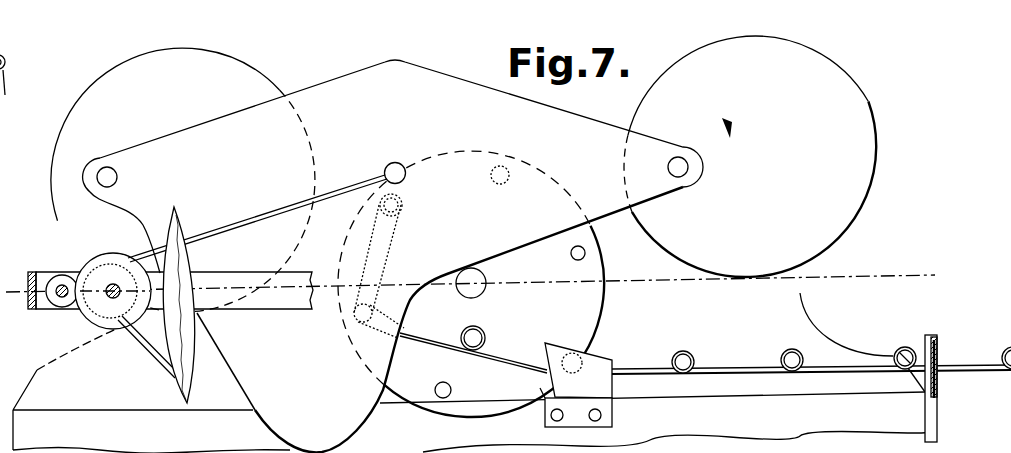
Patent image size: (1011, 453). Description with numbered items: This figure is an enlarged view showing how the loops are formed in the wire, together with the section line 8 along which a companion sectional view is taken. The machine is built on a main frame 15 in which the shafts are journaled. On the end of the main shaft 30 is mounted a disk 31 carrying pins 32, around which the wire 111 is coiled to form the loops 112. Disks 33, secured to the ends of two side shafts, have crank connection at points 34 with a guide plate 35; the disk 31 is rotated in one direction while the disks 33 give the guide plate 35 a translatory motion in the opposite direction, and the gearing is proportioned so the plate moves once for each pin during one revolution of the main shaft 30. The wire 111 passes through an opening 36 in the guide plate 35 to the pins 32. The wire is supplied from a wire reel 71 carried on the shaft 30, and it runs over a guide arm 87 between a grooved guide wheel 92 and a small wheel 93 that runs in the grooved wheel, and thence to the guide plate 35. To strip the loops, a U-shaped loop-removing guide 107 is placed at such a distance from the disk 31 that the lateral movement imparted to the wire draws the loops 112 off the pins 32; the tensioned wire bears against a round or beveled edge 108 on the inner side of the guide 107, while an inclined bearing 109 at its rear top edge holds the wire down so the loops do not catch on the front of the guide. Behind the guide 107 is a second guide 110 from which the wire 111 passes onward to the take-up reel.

The section line 8 is at (475, 285).
The main frame 15 is at (674, 427).
The main shaft 30 is at (479, 292).
The disk 31 is at (393, 256).
The pins 32 is at (451, 390).
The disks 33 is at (463, 174).
The crank connection points 34 is at (117, 177).
The guide plate 35 is at (464, 267).
The opening 36 is at (398, 170).
The wire reel 71 is at (186, 375).
The guide arm 87 is at (278, 295).
The grooved guide wheel 92 is at (98, 312).
The small wheel 93 is at (62, 286).
The loop-removing guide 107 is at (586, 384).
The beveled edge 108 is at (545, 385).
The bearing 109 is at (624, 348).
The second guide 110 is at (938, 354).
The wire 111 is at (268, 213).
The loops 112 is at (791, 350).